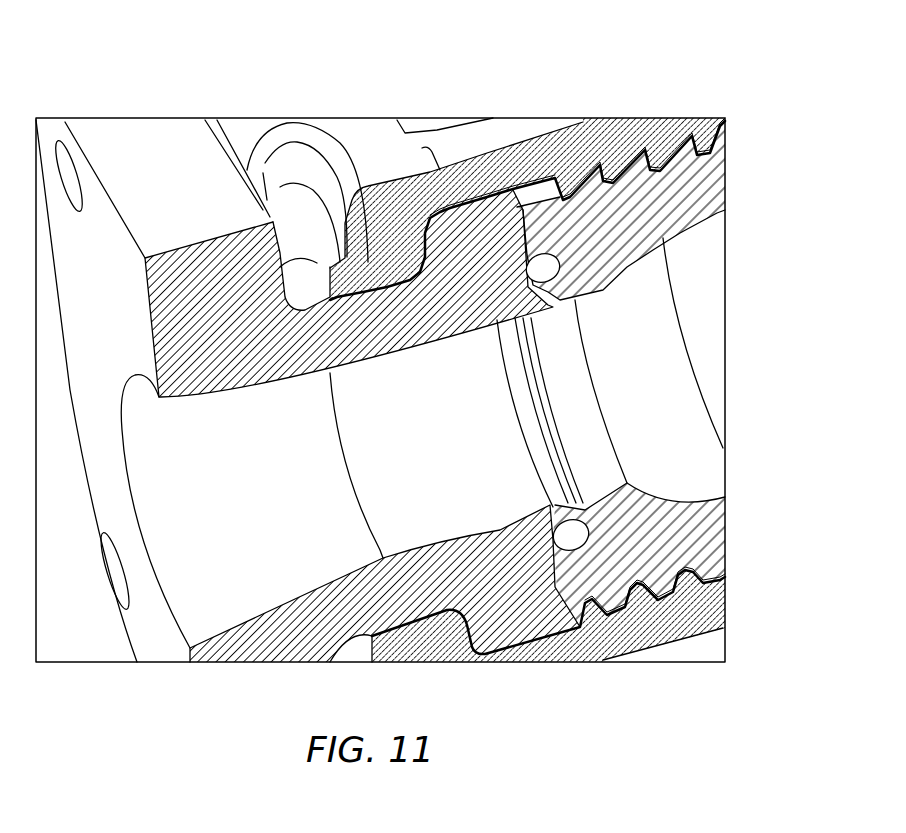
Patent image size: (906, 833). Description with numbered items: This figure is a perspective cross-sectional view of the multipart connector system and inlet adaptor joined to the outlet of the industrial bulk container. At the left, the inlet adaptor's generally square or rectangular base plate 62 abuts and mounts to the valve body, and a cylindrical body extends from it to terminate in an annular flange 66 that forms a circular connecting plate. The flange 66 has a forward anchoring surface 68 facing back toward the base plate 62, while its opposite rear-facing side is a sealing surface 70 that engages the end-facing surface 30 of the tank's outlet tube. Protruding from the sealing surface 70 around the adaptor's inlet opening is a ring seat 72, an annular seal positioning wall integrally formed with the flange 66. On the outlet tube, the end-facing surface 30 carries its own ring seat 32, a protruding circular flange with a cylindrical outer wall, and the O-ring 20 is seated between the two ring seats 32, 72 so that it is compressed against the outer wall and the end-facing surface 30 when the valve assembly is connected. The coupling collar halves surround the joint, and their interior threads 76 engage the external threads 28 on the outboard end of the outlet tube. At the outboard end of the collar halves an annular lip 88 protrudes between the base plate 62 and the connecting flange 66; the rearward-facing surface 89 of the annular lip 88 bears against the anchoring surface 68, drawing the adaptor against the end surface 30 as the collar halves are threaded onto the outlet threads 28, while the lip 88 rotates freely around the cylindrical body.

The O-ring 20 is at (557, 266).
The external threads 28 is at (692, 152).
The end-facing surface 30 is at (582, 629).
The ring seat 32 is at (548, 250).
The base plate 62 is at (138, 132).
The annular flange 66 is at (492, 215).
The forward anchoring surface 68 is at (492, 217).
The sealing surface 70 is at (556, 592).
The ring seat 72 is at (567, 533).
The interior threads 76 is at (708, 130).
The annular lip 88 is at (268, 212).
The rearward-facing surface 89 is at (368, 262).